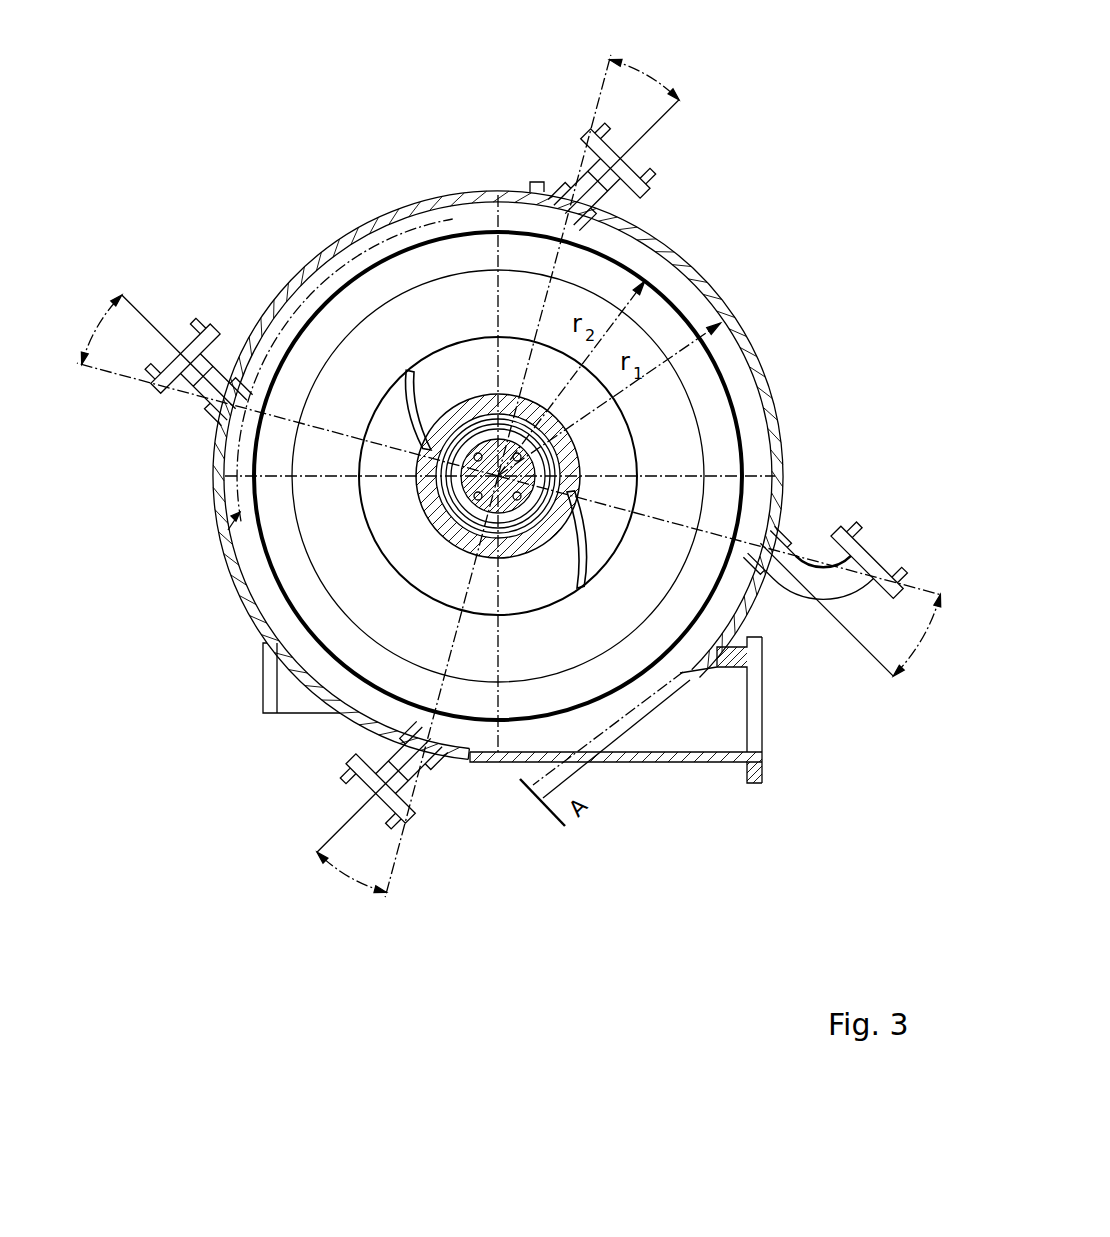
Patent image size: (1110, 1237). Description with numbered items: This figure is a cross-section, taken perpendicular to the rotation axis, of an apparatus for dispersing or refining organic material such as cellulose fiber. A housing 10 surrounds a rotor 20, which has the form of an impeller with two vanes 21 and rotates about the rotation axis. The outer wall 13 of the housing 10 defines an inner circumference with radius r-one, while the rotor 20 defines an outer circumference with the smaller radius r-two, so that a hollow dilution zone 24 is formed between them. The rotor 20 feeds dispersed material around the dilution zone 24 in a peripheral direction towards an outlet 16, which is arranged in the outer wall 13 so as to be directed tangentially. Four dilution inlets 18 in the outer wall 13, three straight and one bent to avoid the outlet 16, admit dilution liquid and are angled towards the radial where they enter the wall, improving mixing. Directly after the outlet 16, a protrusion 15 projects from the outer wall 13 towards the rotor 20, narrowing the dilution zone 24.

The housing 10 is at (313, 253).
The outer wall 13 is at (276, 282).
The protrusion 15 is at (693, 677).
The outlet 16 is at (683, 763).
The dilution inlet 18 is at (585, 132).
The rotor 20 is at (480, 257).
The vane 21 is at (412, 372).
The dilution zone 24 is at (383, 247).